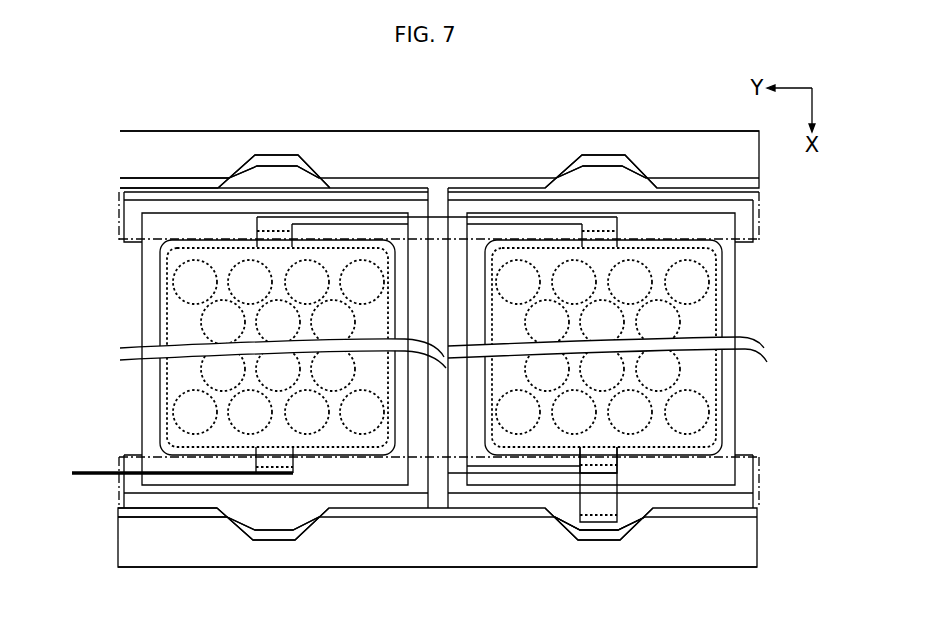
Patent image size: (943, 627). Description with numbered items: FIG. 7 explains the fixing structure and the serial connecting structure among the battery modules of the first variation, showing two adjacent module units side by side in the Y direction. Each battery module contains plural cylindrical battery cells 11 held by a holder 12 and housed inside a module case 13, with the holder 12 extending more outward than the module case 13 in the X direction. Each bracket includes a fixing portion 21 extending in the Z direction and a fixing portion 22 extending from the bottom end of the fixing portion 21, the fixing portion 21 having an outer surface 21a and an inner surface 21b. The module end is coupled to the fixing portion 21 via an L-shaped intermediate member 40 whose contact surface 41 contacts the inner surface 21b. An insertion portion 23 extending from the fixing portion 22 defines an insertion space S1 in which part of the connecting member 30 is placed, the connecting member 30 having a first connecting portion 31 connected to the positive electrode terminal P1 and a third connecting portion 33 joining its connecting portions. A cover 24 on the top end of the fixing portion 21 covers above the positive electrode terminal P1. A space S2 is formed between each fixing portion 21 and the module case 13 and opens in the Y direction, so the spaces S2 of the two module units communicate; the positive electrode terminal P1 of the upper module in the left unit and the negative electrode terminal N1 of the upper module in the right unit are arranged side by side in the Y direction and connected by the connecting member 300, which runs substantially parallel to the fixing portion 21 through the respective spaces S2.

The battery cell 11 is at (186, 292).
The holder 12 is at (143, 307).
The module case 13 is at (160, 289).
The fixing portion 21 is at (362, 178).
The outer surface 21a is at (175, 178).
The inner surface 21b is at (122, 197).
The fixing portion 22 is at (390, 148).
The insertion portion 23 is at (265, 158).
The cover 24 is at (757, 240).
The connecting member 30 is at (562, 507).
The first connecting portion 31 is at (613, 482).
The third connecting portion 33 is at (613, 530).
The intermediate member 40 is at (122, 237).
The contact surface 41 is at (152, 184).
The connecting member 300 is at (455, 222).
The insertion space S1 is at (279, 176).
The space S2 is at (414, 240).
The positive electrode terminal P1 is at (258, 229).
The negative electrode terminal N1 is at (618, 229).